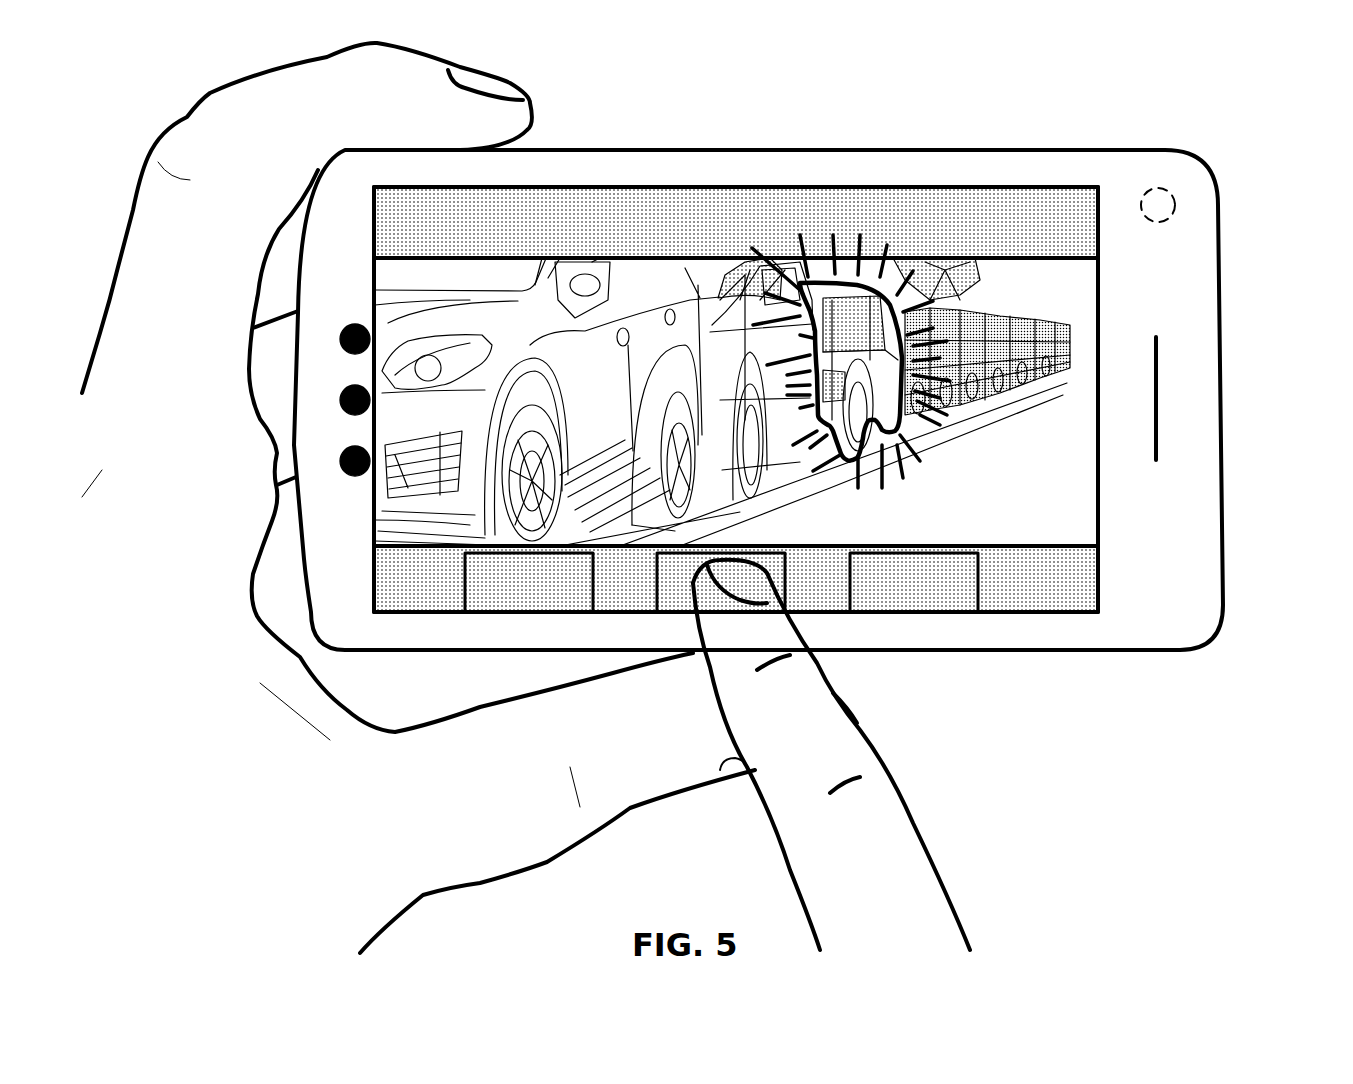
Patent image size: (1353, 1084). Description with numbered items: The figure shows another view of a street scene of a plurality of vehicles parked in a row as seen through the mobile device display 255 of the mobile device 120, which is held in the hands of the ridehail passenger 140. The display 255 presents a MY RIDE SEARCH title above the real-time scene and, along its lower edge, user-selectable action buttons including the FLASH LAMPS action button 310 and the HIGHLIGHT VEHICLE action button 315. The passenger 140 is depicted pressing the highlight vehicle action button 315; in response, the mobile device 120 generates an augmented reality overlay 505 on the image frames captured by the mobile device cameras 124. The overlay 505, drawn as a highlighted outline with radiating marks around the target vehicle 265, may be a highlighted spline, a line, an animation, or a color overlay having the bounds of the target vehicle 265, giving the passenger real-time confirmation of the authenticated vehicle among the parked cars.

The mobile device 120 is at (772, 150).
The mobile device display 255 is at (990, 227).
The mobile device cameras 124 is at (1178, 203).
The target vehicle 265 is at (880, 383).
The augmented reality overlay 505 is at (917, 373).
The FLASH LAMPS action button 310 is at (462, 583).
The HIGHLIGHT VEHICLE action button 315 is at (690, 615).
The ridehail passenger 140 is at (970, 915).